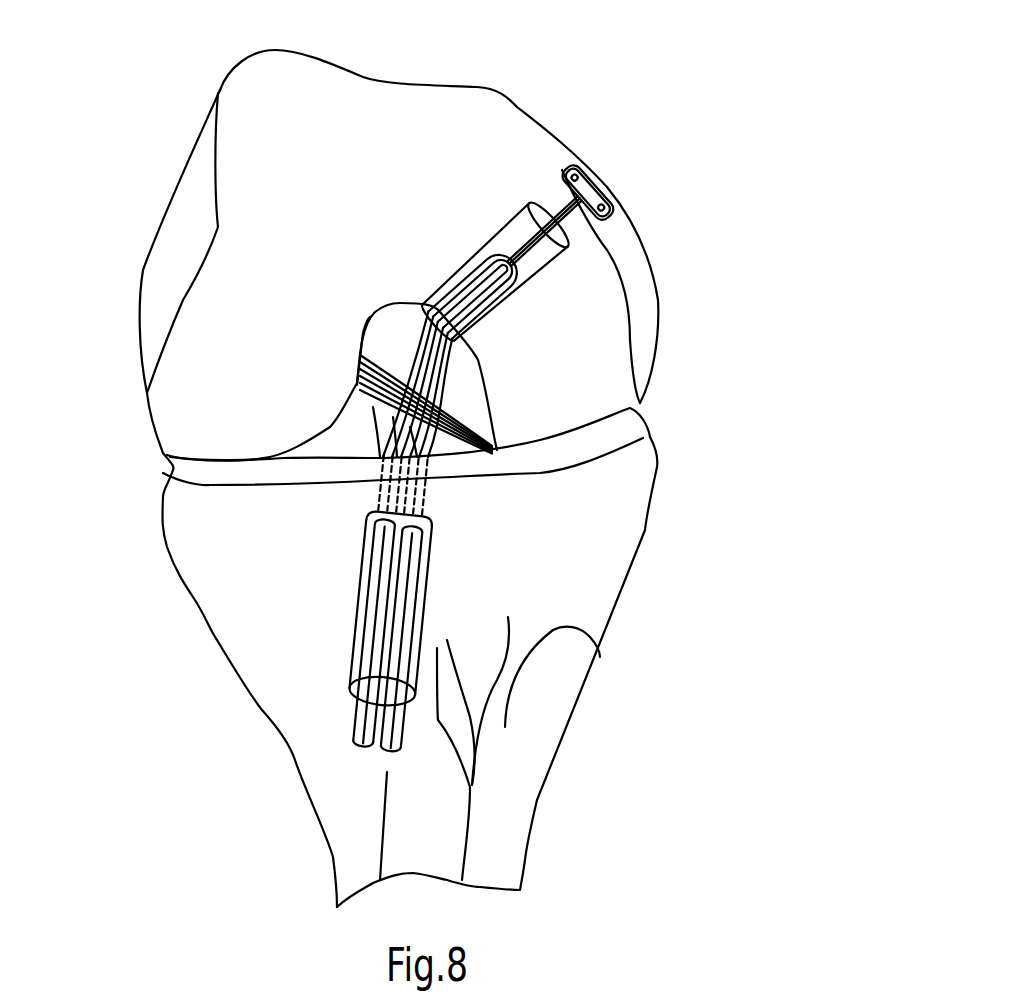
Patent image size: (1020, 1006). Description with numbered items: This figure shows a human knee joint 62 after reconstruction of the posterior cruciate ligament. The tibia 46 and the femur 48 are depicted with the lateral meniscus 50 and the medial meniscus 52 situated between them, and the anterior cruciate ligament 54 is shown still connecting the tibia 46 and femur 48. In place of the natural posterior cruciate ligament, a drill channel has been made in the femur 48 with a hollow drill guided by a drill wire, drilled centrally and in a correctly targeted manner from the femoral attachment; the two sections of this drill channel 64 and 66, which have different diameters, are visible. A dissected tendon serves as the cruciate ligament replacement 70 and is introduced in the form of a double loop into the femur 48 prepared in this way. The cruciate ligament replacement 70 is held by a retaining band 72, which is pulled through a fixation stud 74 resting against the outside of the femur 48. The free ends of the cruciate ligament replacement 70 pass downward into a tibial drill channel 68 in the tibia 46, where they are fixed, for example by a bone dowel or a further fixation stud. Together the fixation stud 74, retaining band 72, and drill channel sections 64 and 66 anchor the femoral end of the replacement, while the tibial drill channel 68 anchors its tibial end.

The tibia 46 is at (568, 588).
The femur 48 is at (235, 345).
The lateral meniscus 50 is at (260, 473).
The medial meniscus 52 is at (557, 453).
The anterior cruciate ligament 54 is at (356, 377).
The knee joint 62 is at (720, 436).
The section of the drill channel 64 is at (525, 258).
The section of the drill channel 66 is at (592, 216).
The tibial drill channel 68 is at (363, 610).
The cruciate ligament replacement 70 is at (505, 303).
The retaining band 72 is at (562, 170).
The fixation stud 74 is at (600, 196).